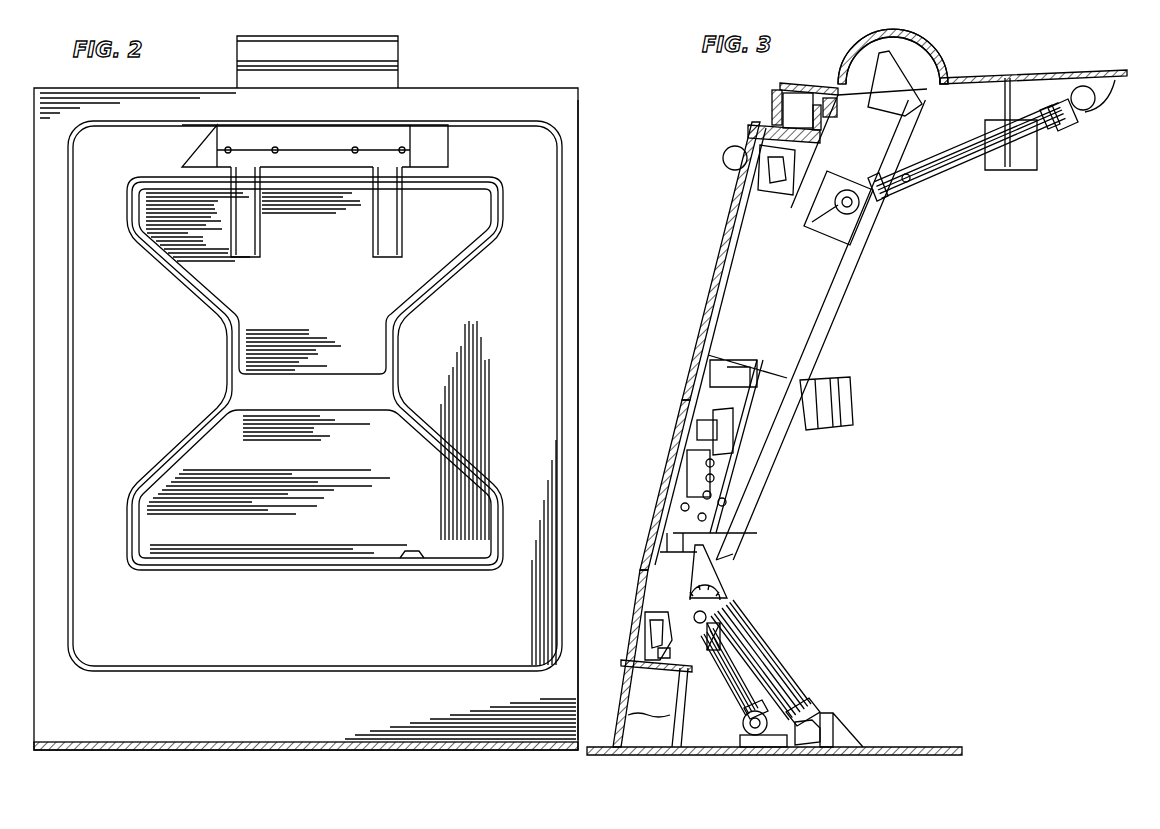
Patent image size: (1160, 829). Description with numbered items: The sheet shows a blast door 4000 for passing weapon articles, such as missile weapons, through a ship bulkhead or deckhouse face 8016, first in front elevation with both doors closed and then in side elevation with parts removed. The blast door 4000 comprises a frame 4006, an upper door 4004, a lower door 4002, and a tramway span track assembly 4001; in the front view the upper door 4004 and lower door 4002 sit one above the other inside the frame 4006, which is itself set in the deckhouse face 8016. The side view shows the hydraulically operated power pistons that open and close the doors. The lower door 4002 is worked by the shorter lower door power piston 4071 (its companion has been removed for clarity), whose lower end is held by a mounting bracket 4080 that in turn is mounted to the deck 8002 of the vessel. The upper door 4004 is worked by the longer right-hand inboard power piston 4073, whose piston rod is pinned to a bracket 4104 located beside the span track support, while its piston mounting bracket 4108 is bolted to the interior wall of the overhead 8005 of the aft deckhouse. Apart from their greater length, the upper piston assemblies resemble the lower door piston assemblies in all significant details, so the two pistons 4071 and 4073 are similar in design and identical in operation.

In FIG. 2, the blast door 4000 is at (597, 155).
In FIG. 3, the tramway span track assembly 4001 is at (842, 308).
In FIG. 2, the lower door 4002 is at (410, 463).
In FIG. 3, the lower door 4002 is at (665, 488).
In FIG. 2, the upper door 4004 is at (425, 258).
In FIG. 3, the upper door 4004 is at (720, 277).
In FIG. 2, the frame 4006 is at (562, 328).
In FIG. 3, the power piston 4071 is at (733, 688).
In FIG. 3, the power piston 4073 is at (932, 175).
In FIG. 3, the mounting bracket 4080 is at (770, 735).
In FIG. 3, the bracket 4104 is at (832, 227).
In FIG. 3, the piston mounting bracket 4108 is at (1100, 90).
In FIG. 3, the deck 8002 is at (878, 747).
In FIG. 3, the overhead 8005 is at (1028, 59).
In FIG. 2, the deckhouse face 8016 is at (578, 258).
In FIG. 3, the deckhouse face 8016 is at (623, 688).